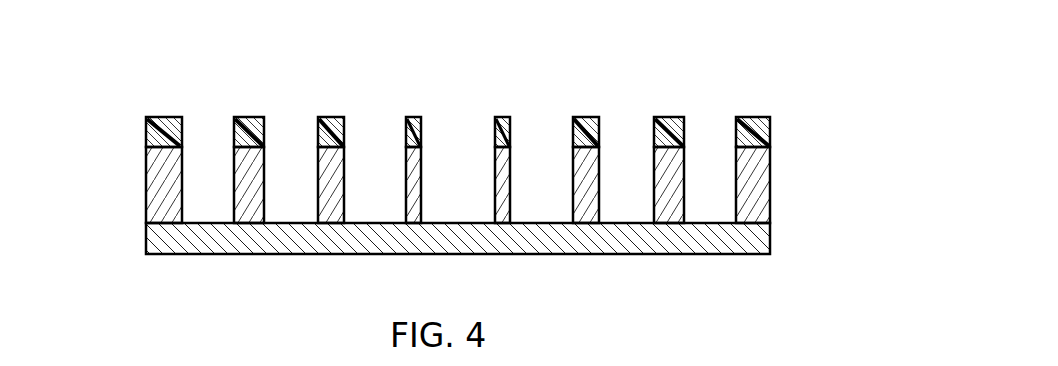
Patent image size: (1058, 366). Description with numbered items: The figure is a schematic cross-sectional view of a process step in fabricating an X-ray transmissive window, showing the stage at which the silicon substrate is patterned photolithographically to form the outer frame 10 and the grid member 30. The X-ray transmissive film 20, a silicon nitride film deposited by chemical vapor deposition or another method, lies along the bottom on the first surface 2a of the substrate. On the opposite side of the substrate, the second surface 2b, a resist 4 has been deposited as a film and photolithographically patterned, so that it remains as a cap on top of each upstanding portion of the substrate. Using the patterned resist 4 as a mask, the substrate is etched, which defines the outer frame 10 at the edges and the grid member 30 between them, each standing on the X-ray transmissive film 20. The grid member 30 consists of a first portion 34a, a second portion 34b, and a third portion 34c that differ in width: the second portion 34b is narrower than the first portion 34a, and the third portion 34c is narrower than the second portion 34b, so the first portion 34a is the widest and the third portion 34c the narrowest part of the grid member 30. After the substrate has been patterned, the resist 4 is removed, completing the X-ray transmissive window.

The grid member 30 is at (724, 77).
The X-ray transmissive film 20 is at (760, 242).
The outer frame 10 is at (760, 188).
The resist 4 is at (765, 133).
The first surface 2a is at (160, 223).
The second surface 2b is at (152, 141).
The first portion 34a is at (249, 147).
The second portion 34b is at (333, 147).
The third portion 34c is at (414, 147).